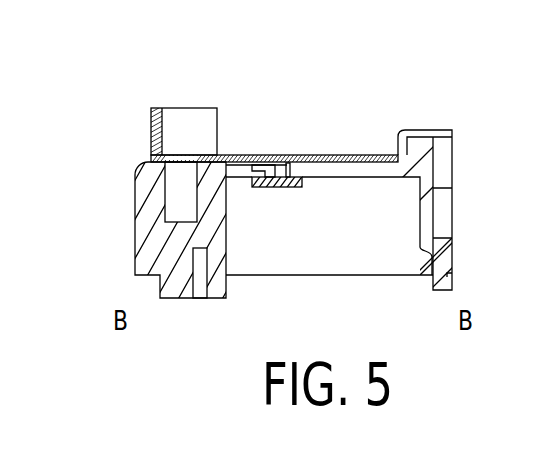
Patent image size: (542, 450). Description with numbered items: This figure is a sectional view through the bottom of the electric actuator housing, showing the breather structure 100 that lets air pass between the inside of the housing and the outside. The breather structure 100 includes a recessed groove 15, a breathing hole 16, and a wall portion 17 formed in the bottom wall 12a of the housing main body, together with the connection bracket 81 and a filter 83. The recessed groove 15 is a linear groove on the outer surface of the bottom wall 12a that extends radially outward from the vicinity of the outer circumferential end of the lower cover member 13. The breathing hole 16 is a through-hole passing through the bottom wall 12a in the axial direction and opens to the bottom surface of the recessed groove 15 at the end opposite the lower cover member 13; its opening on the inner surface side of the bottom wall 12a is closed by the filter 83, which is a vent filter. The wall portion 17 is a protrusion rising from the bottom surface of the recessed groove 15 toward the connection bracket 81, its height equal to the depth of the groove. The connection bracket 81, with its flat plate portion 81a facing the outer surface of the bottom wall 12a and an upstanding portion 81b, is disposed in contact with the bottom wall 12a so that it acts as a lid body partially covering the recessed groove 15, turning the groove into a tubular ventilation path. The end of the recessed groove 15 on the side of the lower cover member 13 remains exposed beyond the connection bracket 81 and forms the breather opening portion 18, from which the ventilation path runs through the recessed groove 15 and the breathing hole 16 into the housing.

The bottom wall 12a is at (335, 170).
The lower cover member 13 is at (410, 160).
The recessed groove 15 is at (352, 155).
The breathing hole 16 is at (273, 163).
The wall portion 17 is at (291, 163).
The breather opening portion 18 is at (389, 154).
The connection bracket 81 is at (140, 83).
The flat plate portion 81a is at (243, 155).
The vertical portion of bracket 81b is at (180, 125).
The filter 83 is at (273, 188).
The breather structure 100 is at (332, 154).